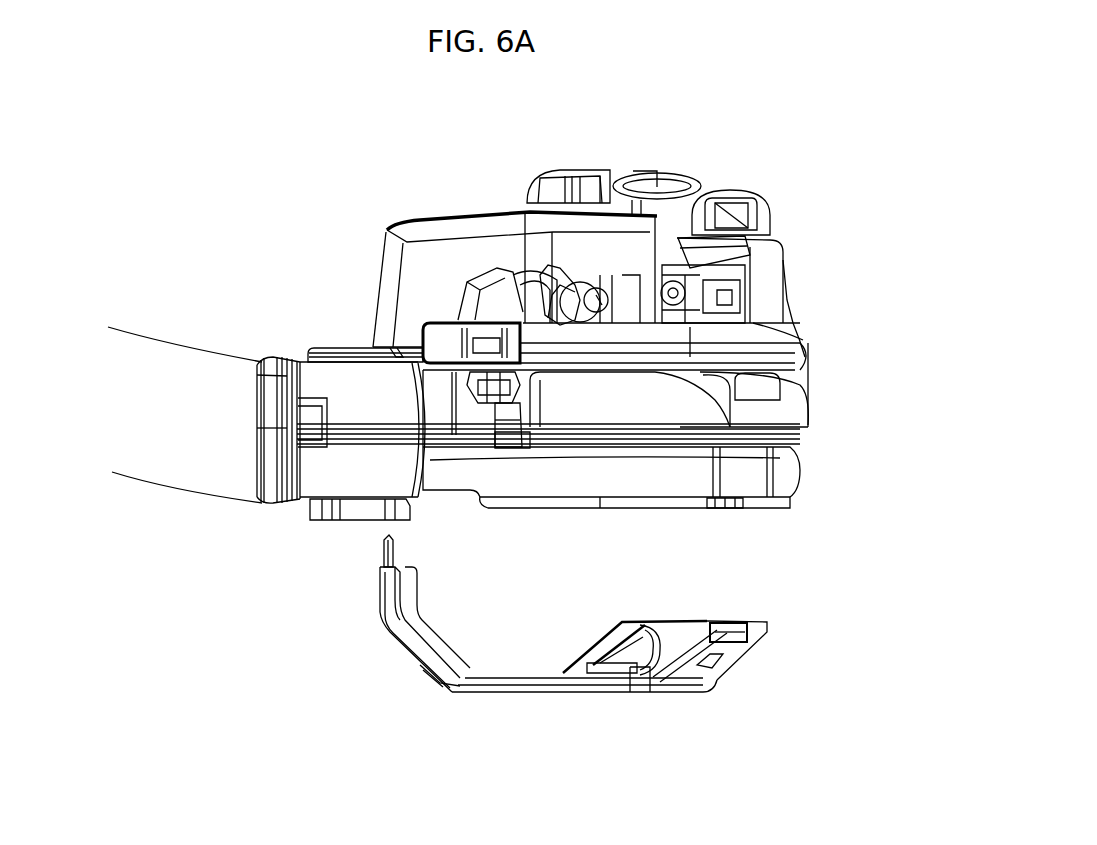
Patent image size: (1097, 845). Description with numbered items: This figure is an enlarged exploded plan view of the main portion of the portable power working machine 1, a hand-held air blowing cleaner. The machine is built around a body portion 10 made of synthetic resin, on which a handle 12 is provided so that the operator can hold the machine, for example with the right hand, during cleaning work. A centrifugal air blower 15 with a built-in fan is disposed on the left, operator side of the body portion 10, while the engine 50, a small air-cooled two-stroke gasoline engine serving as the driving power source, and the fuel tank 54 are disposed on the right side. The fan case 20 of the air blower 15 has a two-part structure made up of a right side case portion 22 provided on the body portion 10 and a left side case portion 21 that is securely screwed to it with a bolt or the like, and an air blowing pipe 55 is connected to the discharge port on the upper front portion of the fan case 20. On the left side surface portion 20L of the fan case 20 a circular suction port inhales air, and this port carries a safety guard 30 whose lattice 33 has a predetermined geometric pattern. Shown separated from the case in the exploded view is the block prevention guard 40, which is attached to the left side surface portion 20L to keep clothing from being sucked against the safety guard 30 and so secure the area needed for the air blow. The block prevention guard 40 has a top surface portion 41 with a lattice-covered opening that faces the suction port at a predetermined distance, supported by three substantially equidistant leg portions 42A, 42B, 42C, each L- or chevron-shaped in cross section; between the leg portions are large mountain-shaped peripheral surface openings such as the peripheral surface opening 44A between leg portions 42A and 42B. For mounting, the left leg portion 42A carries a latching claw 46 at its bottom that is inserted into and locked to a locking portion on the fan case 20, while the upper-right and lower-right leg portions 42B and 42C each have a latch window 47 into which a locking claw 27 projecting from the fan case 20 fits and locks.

The portable power working machine 1 is at (335, 212).
The body portion 10 is at (753, 320).
The handle 12 is at (560, 332).
The centrifugal air blower 15 is at (340, 350).
The fan case 20 is at (853, 370).
The left side surface portion 20L is at (605, 497).
The left side case portion 21 is at (740, 440).
The right side case portion 22 is at (806, 378).
The locking claw 27 is at (718, 505).
The safety guard 30 is at (510, 512).
The lattice 33 is at (512, 513).
The block prevention guard 40 is at (568, 692).
The top surface portion 41 is at (630, 692).
The leg portion 42A is at (385, 600).
The leg portion 42B is at (678, 675).
The leg portion 42C is at (620, 640).
The peripheral surface opening 44A is at (422, 660).
The latching claw 46 is at (382, 556).
The latch window 47 is at (720, 665).
The engine 50 is at (487, 215).
The fuel tank 54 is at (760, 200).
The air blowing pipe 55 is at (165, 345).